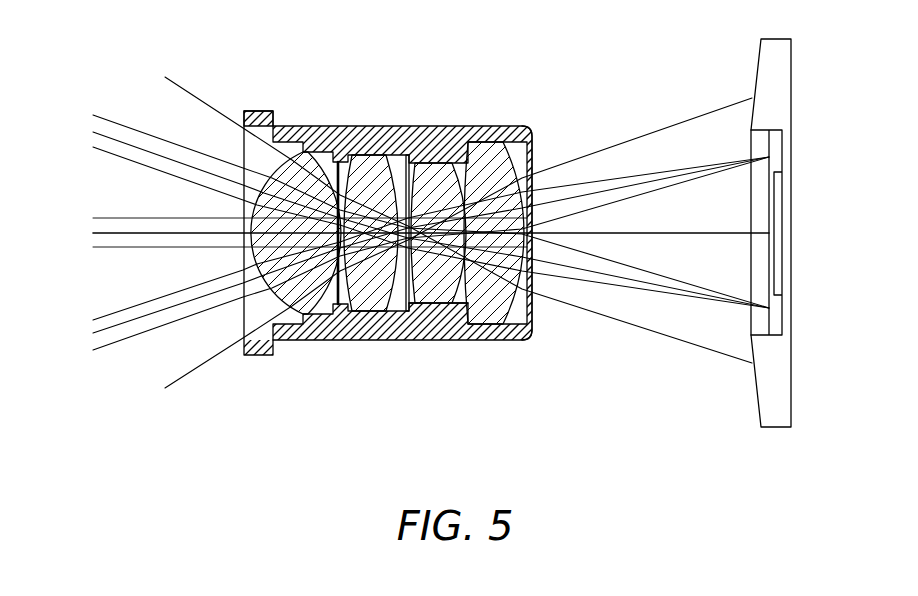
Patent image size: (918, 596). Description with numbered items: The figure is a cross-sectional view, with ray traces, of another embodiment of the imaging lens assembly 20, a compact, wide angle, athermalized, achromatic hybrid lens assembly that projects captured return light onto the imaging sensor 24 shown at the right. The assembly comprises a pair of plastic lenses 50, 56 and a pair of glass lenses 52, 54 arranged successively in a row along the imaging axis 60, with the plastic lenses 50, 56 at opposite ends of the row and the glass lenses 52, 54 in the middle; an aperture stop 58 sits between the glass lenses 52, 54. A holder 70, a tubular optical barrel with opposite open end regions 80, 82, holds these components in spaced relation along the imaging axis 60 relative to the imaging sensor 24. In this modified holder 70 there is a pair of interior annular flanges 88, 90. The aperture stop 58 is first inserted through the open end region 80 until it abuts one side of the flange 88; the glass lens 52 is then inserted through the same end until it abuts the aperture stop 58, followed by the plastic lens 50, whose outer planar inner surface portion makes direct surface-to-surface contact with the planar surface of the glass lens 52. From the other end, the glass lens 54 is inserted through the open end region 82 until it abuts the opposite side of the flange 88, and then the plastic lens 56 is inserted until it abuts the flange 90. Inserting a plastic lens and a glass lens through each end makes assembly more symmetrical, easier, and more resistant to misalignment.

The imaging lens assembly 20 is at (192, 50).
The open end region 80 is at (262, 111).
The plastic lens 50 is at (306, 158).
The glass lens 52 is at (354, 166).
The holder 70 is at (378, 126).
The aperture stop 58 is at (410, 158).
The glass lens 54 is at (453, 164).
The plastic lens 56 is at (494, 160).
The open end region 82 is at (524, 128).
The imaging sensor 24 is at (780, 212).
The imaging axis 60 is at (95, 232).
The interior annular flange 88 is at (416, 302).
The interior annular flange 90 is at (453, 302).